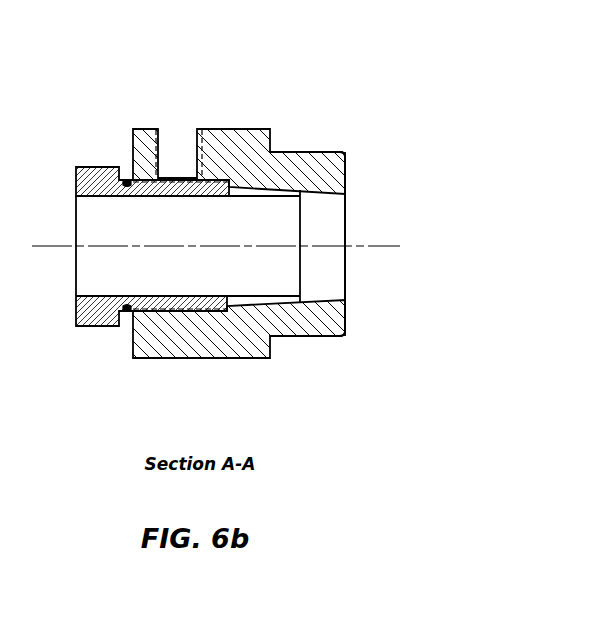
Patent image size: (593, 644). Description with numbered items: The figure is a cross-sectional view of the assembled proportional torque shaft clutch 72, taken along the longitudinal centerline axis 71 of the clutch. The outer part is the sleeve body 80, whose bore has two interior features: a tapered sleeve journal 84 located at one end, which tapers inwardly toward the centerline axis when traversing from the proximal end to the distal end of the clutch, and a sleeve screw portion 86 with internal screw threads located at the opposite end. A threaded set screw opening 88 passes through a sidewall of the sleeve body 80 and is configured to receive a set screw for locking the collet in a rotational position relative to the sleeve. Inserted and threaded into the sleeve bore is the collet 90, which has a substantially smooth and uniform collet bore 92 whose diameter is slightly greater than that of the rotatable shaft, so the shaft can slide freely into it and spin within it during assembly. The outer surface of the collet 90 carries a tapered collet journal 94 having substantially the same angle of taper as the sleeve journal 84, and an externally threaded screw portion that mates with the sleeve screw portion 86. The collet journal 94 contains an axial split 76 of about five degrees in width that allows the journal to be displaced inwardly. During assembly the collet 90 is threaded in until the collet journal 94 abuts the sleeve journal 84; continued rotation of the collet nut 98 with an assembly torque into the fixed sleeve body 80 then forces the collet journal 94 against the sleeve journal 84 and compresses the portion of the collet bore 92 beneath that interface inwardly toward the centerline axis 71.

The longitudinal centerline axis 71 is at (52, 247).
The shaft clutch 72 is at (277, 87).
The axial split 76 is at (252, 190).
The sleeve body 80 is at (322, 337).
The tapered sleeve journal 84 is at (323, 195).
The sleeve screw portion 86 is at (177, 311).
The threaded set screw opening 88 is at (198, 149).
The collet 90 is at (102, 182).
The collet bore 92 is at (145, 198).
The tapered collet journal 94 is at (297, 302).
The collet nut 98 is at (87, 327).